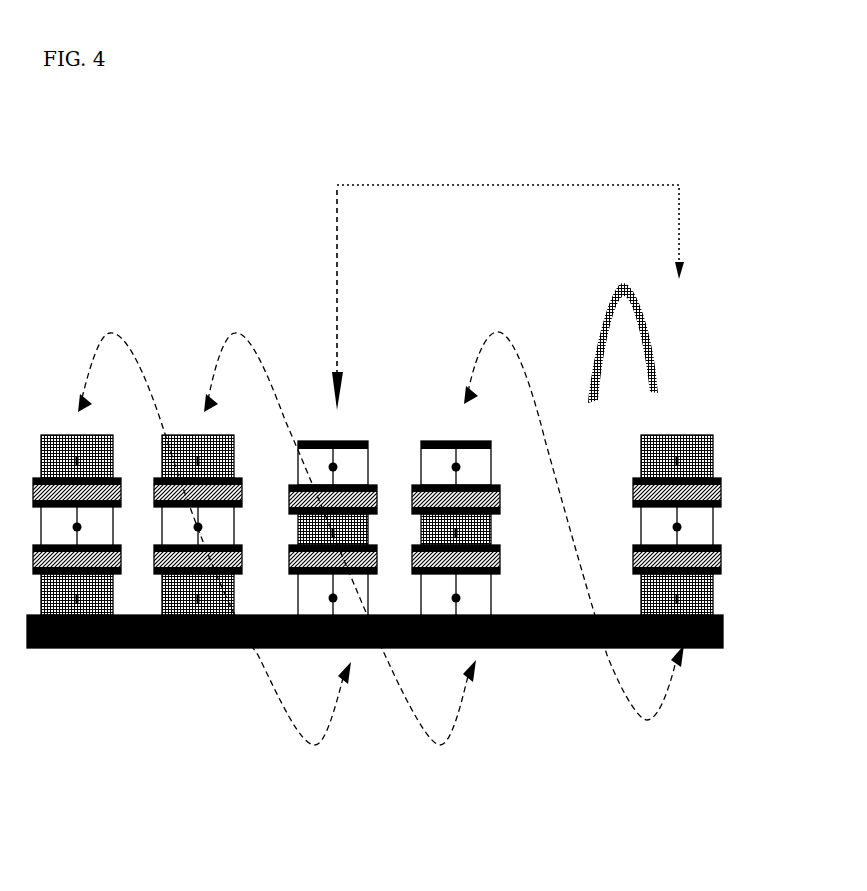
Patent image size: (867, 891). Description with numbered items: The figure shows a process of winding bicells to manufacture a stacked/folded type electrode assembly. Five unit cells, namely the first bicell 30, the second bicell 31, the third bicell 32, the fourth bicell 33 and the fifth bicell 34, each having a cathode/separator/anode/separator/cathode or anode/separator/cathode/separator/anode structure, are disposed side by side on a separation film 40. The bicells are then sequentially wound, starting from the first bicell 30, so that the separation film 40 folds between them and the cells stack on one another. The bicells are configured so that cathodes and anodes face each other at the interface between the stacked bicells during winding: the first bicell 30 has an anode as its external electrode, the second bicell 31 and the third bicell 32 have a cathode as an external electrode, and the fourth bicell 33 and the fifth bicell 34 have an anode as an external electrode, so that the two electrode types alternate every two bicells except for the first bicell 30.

The first bicell 30 is at (692, 437).
The second bicell 31 is at (447, 430).
The third bicell 32 is at (326, 430).
The fourth bicell 33 is at (183, 430).
The fifth bicell 34 is at (65, 430).
The separation film 40 is at (165, 767).